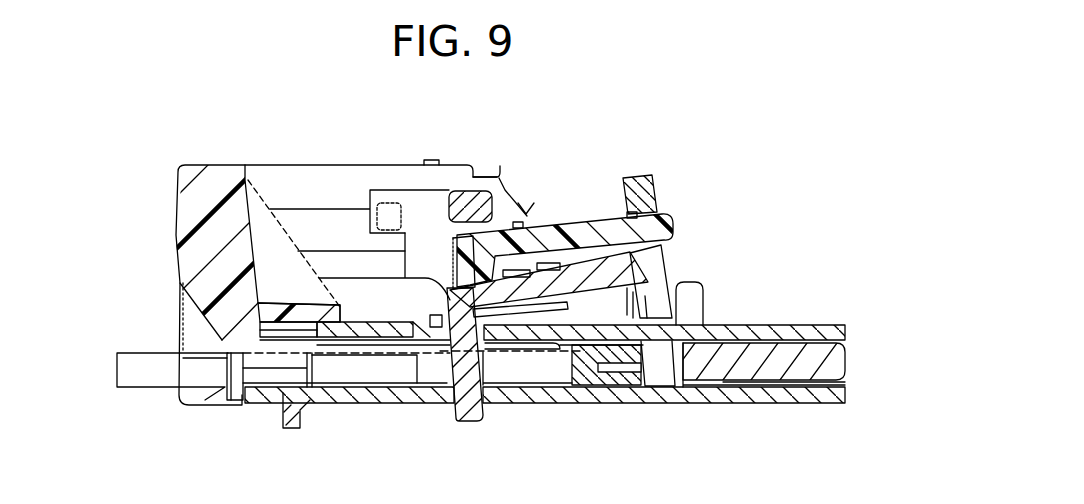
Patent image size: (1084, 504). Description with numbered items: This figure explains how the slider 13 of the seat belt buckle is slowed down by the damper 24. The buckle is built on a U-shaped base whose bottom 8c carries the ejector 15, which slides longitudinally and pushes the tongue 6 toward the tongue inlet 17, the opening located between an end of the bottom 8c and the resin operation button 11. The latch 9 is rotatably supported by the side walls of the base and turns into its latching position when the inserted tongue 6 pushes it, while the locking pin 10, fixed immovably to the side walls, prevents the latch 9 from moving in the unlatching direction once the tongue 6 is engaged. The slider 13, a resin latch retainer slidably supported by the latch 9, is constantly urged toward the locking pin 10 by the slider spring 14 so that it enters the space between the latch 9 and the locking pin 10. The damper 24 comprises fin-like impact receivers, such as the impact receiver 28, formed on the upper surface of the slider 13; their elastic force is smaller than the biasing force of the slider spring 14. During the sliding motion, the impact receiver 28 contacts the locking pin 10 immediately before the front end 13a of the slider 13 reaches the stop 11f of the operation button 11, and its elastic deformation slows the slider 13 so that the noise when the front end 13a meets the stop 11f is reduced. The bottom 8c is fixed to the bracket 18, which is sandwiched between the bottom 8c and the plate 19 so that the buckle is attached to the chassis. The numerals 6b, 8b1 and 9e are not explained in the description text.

The tongue 6 is at (162, 378).
The wire holding portion 6b is at (314, 382).
The bottom 8c is at (368, 400).
The terminal projection 8b1 is at (687, 293).
The latch 9 is at (478, 413).
The terminal tab 9e is at (640, 180).
The locking pin 10 is at (498, 192).
The operation button 11 is at (163, 192).
The stop 11f is at (443, 275).
The slider 13 is at (603, 232).
The front end 13a is at (450, 250).
The slider spring 14 is at (553, 222).
The ejector 15 is at (592, 380).
The tongue inlet 17 is at (288, 392).
The bracket 18 is at (828, 357).
The plate 19 is at (778, 323).
The damper 24 is at (519, 203).
The impact receiver 28 is at (528, 208).